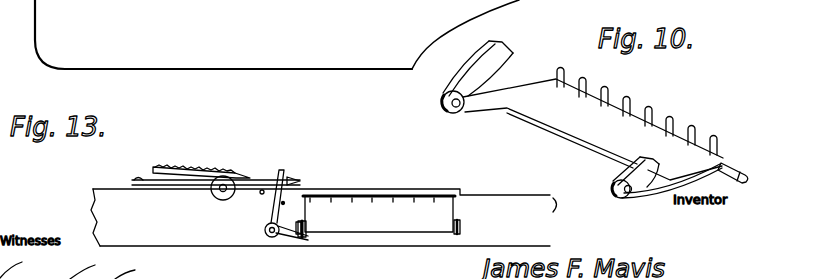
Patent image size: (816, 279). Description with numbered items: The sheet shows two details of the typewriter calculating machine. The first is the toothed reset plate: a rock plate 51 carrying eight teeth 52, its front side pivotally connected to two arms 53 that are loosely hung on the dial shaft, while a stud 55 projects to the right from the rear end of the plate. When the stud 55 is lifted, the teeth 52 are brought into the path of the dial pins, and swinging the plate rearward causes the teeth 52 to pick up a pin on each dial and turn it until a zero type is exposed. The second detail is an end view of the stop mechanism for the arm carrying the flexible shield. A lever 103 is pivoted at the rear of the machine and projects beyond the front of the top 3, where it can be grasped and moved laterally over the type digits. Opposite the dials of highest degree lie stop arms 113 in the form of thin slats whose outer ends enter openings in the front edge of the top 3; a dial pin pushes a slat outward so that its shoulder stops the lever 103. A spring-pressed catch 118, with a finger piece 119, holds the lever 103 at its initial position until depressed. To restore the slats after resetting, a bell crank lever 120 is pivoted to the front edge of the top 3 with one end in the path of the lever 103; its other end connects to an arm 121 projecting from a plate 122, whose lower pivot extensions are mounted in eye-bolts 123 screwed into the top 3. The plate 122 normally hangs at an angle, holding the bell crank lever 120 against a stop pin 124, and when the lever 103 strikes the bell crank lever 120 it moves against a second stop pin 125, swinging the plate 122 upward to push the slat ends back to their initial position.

In FIG. 13, the top 3 is at (540, 196).
In FIG. 10, the rock plate 51 is at (562, 134).
In FIG. 10, the teeth 52 is at (668, 116).
In FIG. 10, the arms 53 is at (462, 73).
In FIG. 10, the stud 55 is at (685, 170).
In FIG. 13, the lever 103 is at (283, 178).
In FIG. 13, the stop arms 113 is at (420, 195).
In FIG. 13, the spring-pressed catch 118 is at (269, 178).
In FIG. 13, the finger piece 119 is at (180, 168).
In FIG. 13, the bell crank lever 120 is at (268, 238).
In FIG. 13, the arm 121 is at (312, 240).
In FIG. 13, the plate 122 is at (403, 224).
In FIG. 13, the eye-bolts 123 is at (304, 226).
In FIG. 13, the stop pin 124 is at (283, 203).
In FIG. 13, the second stop pin 125 is at (260, 194).